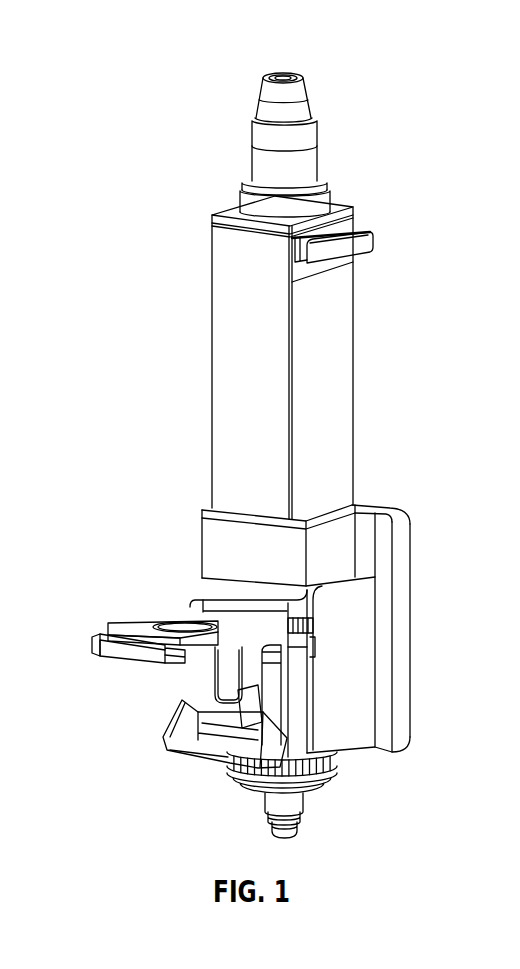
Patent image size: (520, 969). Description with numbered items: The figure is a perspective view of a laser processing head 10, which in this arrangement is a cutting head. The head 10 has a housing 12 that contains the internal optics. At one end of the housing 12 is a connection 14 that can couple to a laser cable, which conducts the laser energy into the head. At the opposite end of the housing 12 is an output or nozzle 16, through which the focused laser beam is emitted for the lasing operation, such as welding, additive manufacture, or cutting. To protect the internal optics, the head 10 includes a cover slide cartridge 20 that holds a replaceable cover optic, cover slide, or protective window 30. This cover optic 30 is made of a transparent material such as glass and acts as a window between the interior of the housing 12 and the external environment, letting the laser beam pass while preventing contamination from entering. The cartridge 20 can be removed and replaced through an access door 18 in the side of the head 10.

The laser processing head 10 is at (219, 71).
The housing 12 is at (354, 369).
The connection 14 is at (303, 74).
The nozzle 16 is at (303, 816).
The access door 18 is at (172, 757).
The cover slide cartridge 20 is at (144, 622).
The cover optic 30 is at (180, 626).